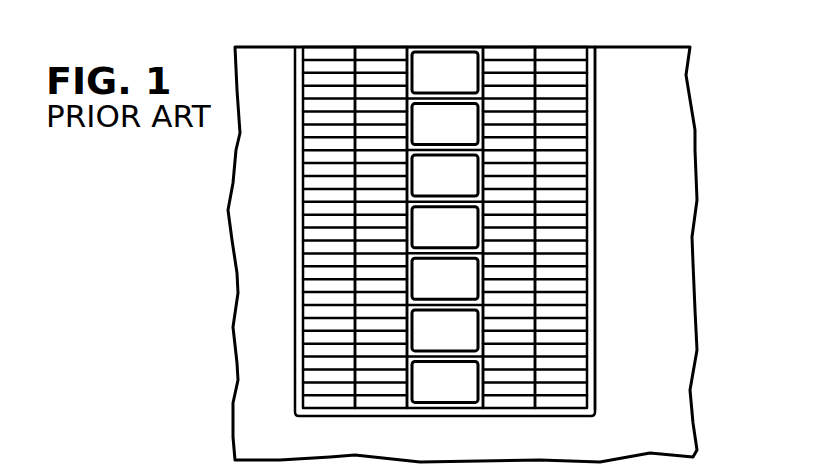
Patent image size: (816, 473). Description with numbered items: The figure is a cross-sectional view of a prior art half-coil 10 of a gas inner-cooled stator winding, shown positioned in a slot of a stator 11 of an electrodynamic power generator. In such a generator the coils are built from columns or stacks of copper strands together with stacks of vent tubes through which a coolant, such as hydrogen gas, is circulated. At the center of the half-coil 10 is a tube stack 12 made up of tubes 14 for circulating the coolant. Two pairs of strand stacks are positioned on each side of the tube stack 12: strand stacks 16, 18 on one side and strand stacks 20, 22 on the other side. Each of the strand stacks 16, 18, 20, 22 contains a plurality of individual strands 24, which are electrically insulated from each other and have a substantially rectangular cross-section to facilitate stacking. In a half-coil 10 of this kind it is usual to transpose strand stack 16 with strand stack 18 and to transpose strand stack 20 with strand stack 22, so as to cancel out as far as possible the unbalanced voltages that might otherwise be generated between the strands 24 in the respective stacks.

The half-coil 10 is at (618, 107).
The stator 11 is at (678, 316).
The tube stack 12 is at (440, 413).
The tubes 14 is at (440, 46).
The strand stack 16 is at (342, 46).
The strand stack 18 is at (400, 46).
The strand stack 20 is at (508, 46).
The strand stack 22 is at (565, 46).
The strands 24 is at (592, 180).